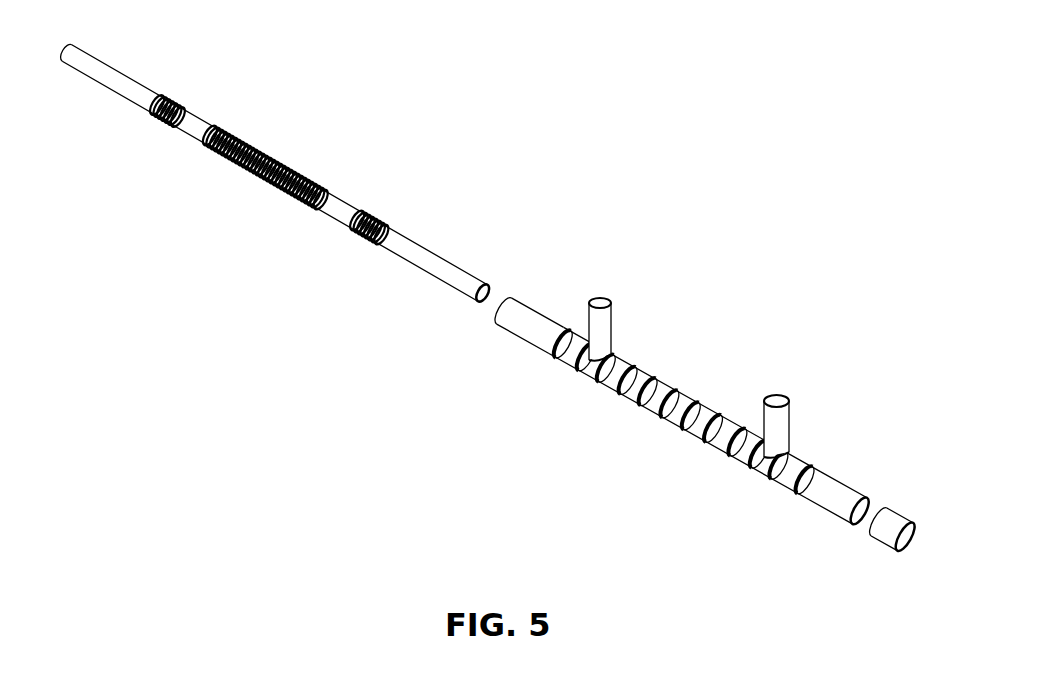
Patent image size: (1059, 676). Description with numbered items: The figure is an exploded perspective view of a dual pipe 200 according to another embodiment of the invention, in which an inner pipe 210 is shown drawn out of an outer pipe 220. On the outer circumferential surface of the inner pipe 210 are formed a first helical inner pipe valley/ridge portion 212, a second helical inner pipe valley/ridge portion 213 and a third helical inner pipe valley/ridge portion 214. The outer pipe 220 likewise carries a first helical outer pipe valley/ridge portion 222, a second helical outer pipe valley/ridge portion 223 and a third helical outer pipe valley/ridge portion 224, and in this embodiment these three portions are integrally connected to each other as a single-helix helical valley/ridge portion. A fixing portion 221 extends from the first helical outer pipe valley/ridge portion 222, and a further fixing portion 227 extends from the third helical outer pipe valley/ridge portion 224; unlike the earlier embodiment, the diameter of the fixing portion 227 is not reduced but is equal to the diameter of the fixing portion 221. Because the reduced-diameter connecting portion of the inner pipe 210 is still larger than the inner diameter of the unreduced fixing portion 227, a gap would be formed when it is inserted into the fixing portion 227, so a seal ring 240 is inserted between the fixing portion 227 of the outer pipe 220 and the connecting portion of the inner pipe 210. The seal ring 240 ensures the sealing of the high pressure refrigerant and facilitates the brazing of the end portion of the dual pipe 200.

The dual pipe 200 is at (515, 297).
The inner pipe 210 is at (274, 172).
The first helical inner pipe valley/ridge portion 212 is at (140, 112).
The second helical inner pipe valley/ridge portion 213 is at (240, 173).
The third helical inner pipe valley/ridge portion 214 is at (350, 235).
The outer pipe 220 is at (701, 380).
The fixing portion 221 is at (540, 307).
The first helical outer pipe valley/ridge portion 222 is at (543, 343).
The second helical outer pipe valley/ridge portion 223 is at (653, 413).
The third helical outer pipe valley/ridge portion 224 is at (823, 470).
The fixing portion 227 is at (860, 487).
The seal ring 240 is at (893, 523).